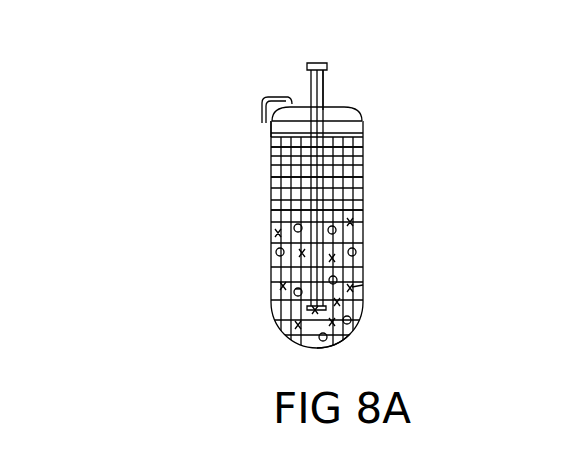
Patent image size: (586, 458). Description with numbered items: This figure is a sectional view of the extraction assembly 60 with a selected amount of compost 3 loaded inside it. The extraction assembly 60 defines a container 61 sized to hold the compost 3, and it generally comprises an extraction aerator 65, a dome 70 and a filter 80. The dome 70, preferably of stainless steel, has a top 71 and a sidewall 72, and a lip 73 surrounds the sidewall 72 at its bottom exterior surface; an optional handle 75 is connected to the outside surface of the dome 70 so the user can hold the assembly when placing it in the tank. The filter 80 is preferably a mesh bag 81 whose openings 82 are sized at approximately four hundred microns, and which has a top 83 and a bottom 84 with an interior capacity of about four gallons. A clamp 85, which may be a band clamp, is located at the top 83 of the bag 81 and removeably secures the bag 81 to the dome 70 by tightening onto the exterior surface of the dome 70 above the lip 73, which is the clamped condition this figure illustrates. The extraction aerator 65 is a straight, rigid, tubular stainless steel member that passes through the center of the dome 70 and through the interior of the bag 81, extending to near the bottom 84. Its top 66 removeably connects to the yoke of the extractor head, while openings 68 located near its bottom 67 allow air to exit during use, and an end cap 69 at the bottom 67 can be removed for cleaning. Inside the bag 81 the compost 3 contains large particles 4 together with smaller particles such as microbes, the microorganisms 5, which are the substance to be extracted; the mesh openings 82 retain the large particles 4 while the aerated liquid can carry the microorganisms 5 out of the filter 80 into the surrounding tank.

The extraction assembly 60 is at (386, 199).
The container 61 is at (326, 309).
The extraction aerator 65 is at (308, 67).
The top of the extraction aerator 66 is at (326, 70).
The bottom of the extraction aerator 67 is at (283, 270).
The openings 68 is at (300, 303).
The end cap 69 is at (307, 310).
The dome 70 is at (335, 107).
The top of the dome 71 is at (340, 108).
The sidewall of the dome 72 is at (262, 112).
The lip 73 is at (271, 130).
The handle 75 is at (275, 98).
The filter 80 is at (278, 250).
The mesh bag 81 is at (271, 215).
The openings 82 is at (271, 178).
The top of the mesh bag 83 is at (271, 150).
The bottom of the mesh bag 84 is at (342, 340).
The clamp 85 is at (362, 132).
The compost 3 is at (300, 340).
The large particles 4 is at (318, 338).
The microorganisms 5 is at (290, 328).